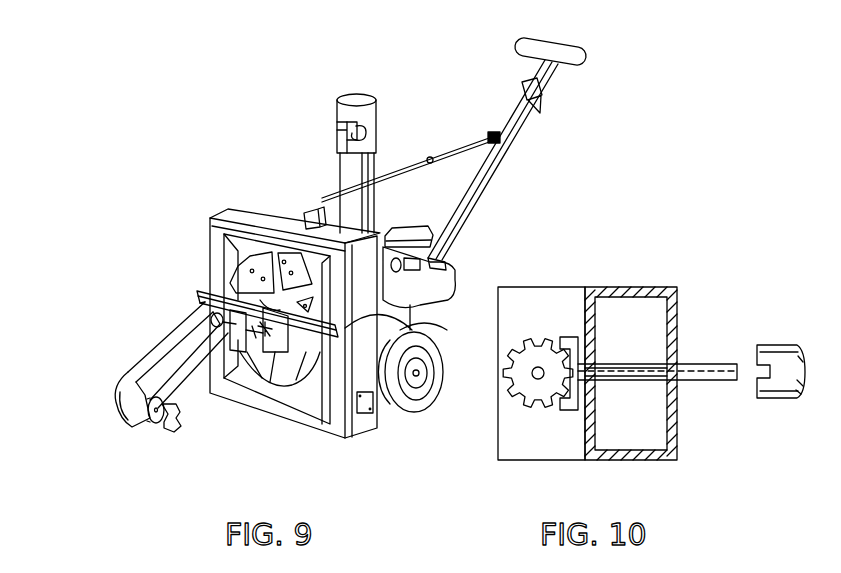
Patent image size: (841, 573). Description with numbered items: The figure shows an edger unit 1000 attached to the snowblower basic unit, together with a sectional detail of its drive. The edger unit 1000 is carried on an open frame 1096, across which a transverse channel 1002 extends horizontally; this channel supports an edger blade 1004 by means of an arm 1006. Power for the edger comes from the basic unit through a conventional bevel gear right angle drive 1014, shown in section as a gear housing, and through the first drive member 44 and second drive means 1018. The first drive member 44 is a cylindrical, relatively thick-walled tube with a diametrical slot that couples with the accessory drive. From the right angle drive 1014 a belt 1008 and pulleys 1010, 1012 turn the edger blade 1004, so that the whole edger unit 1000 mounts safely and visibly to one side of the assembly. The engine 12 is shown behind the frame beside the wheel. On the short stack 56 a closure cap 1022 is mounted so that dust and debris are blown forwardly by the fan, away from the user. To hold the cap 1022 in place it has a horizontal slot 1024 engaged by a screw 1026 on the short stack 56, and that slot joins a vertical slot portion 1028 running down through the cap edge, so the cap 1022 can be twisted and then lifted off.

In FIG. 9, the engine power unit 12 is at (430, 320).
In FIG. 10, the first drive member 44 is at (781, 356).
In FIG. 9, the short stack 56 is at (345, 185).
In FIG. 9, the edger unit 1000 is at (146, 306).
In FIG. 9, the transverse channel 1002 is at (348, 333).
In FIG. 9, the edger blade 1004 is at (166, 426).
In FIG. 9, the arm 1006 is at (120, 387).
In FIG. 9, the belt 1008 is at (167, 370).
In FIG. 9, the pulley 1010 is at (156, 423).
In FIG. 9, the pulley 1012 is at (213, 313).
In FIG. 9, the bevel gear right angle drive 1014 is at (246, 376).
In FIG. 10, the bevel gear right angle drive 1014 is at (492, 440).
In FIG. 10, the second drive means 1018 is at (728, 372).
In FIG. 9, the closure cap 1022 is at (375, 103).
In FIG. 9, the horizontal slot 1024 is at (363, 138).
In FIG. 9, the screw 1026 is at (339, 128).
In FIG. 9, the vertical slot portion 1028 is at (338, 166).
In FIG. 9, the frame 1096 is at (216, 213).